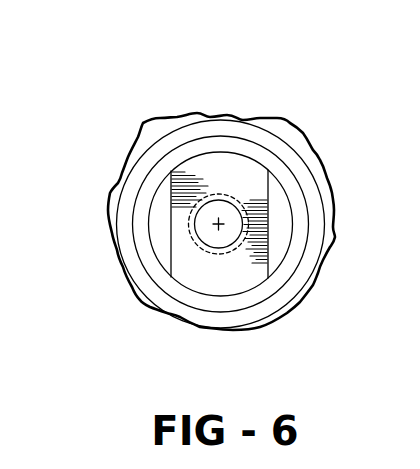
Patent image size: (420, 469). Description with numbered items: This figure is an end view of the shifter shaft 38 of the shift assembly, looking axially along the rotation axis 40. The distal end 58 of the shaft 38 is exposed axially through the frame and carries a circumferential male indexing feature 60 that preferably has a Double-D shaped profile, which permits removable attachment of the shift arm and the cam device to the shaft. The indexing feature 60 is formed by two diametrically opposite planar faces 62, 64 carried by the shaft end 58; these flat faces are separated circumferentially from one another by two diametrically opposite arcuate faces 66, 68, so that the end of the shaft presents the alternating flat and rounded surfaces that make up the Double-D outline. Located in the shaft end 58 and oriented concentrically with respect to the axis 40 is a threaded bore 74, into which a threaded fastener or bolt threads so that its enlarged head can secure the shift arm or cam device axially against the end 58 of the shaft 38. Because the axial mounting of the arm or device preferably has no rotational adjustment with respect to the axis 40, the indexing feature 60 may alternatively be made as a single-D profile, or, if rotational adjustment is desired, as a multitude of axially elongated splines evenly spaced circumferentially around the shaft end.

The shaft 38 is at (210, 152).
The arcuate face 66 is at (197, 151).
The threaded bore 74 is at (216, 200).
The distal end 58 is at (196, 164).
The rotation axis 40 is at (219, 224).
The male indexing feature 60 is at (270, 216).
The planar face 62 is at (171, 233).
The planar face 64 is at (273, 233).
The arcuate face 68 is at (193, 287).